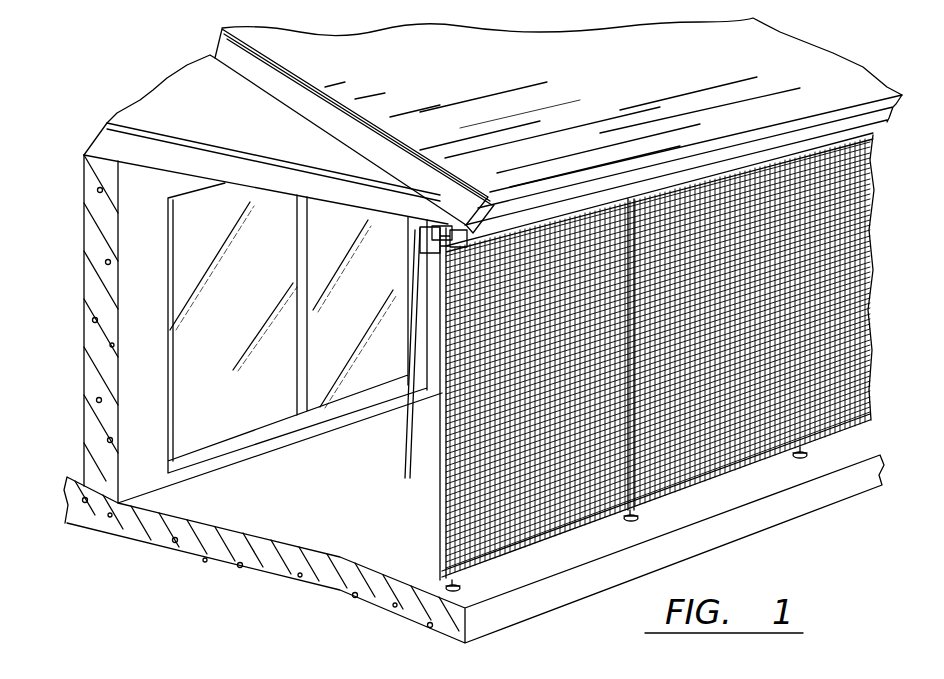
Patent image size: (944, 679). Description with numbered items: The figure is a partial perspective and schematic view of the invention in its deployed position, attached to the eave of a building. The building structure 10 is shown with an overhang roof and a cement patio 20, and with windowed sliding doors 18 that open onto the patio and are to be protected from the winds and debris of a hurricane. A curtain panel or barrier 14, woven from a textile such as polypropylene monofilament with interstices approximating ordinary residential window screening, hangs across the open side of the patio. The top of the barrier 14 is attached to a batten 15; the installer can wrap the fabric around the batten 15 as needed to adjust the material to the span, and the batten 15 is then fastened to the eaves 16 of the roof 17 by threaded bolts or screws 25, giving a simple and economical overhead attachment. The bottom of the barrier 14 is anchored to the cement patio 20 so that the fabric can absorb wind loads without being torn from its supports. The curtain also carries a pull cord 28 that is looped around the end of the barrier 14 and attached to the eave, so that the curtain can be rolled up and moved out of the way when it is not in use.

The building structure 10 is at (117, 347).
The curtain panel or barrier 14 is at (792, 190).
The batten 15 is at (508, 205).
The eaves 16 is at (423, 212).
The roof 17 is at (382, 152).
The windowed sliding doors 18 is at (246, 306).
The cement patio 20 is at (288, 510).
The threaded bolts or screws 25 is at (483, 196).
The pull cord 28 is at (406, 472).